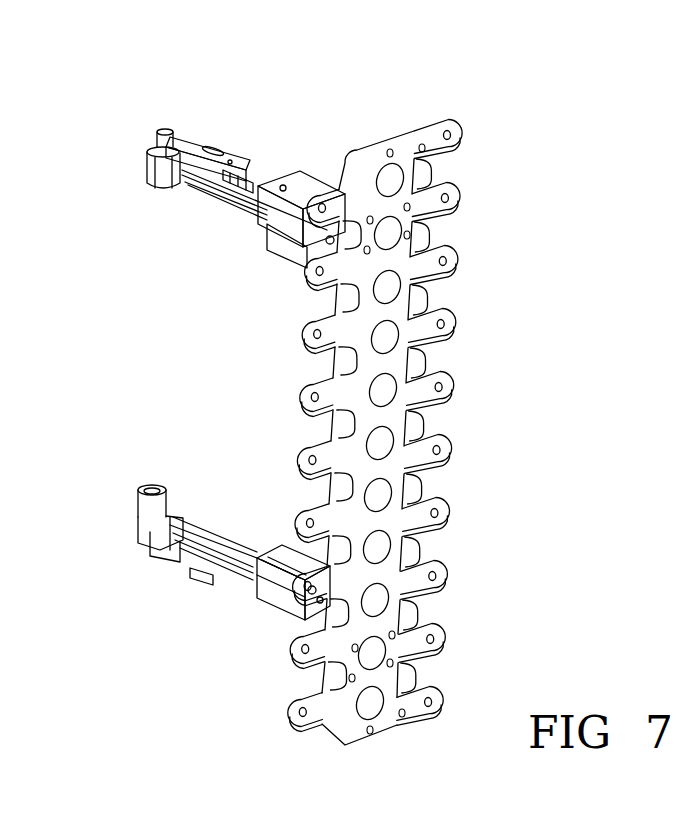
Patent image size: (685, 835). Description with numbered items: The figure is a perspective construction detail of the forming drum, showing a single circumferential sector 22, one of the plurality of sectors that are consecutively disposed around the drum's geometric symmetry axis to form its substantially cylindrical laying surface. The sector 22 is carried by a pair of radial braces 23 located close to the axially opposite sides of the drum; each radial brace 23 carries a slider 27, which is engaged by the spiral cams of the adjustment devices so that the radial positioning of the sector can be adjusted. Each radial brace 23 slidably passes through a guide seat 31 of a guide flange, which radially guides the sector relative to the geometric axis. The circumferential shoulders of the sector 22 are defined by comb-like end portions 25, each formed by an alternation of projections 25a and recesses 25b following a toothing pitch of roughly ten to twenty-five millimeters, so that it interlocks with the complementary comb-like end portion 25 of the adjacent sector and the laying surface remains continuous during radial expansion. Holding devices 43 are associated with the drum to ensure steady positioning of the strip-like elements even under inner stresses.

The circumferential sector 22 is at (425, 120).
The radial brace 23 is at (256, 173).
The comb-like end portion 25 is at (465, 139).
The projection 25a is at (450, 265).
The recess 25b is at (430, 292).
The slider 27 is at (165, 190).
The guide seat 31 is at (297, 190).
The holding device 43 is at (392, 389).